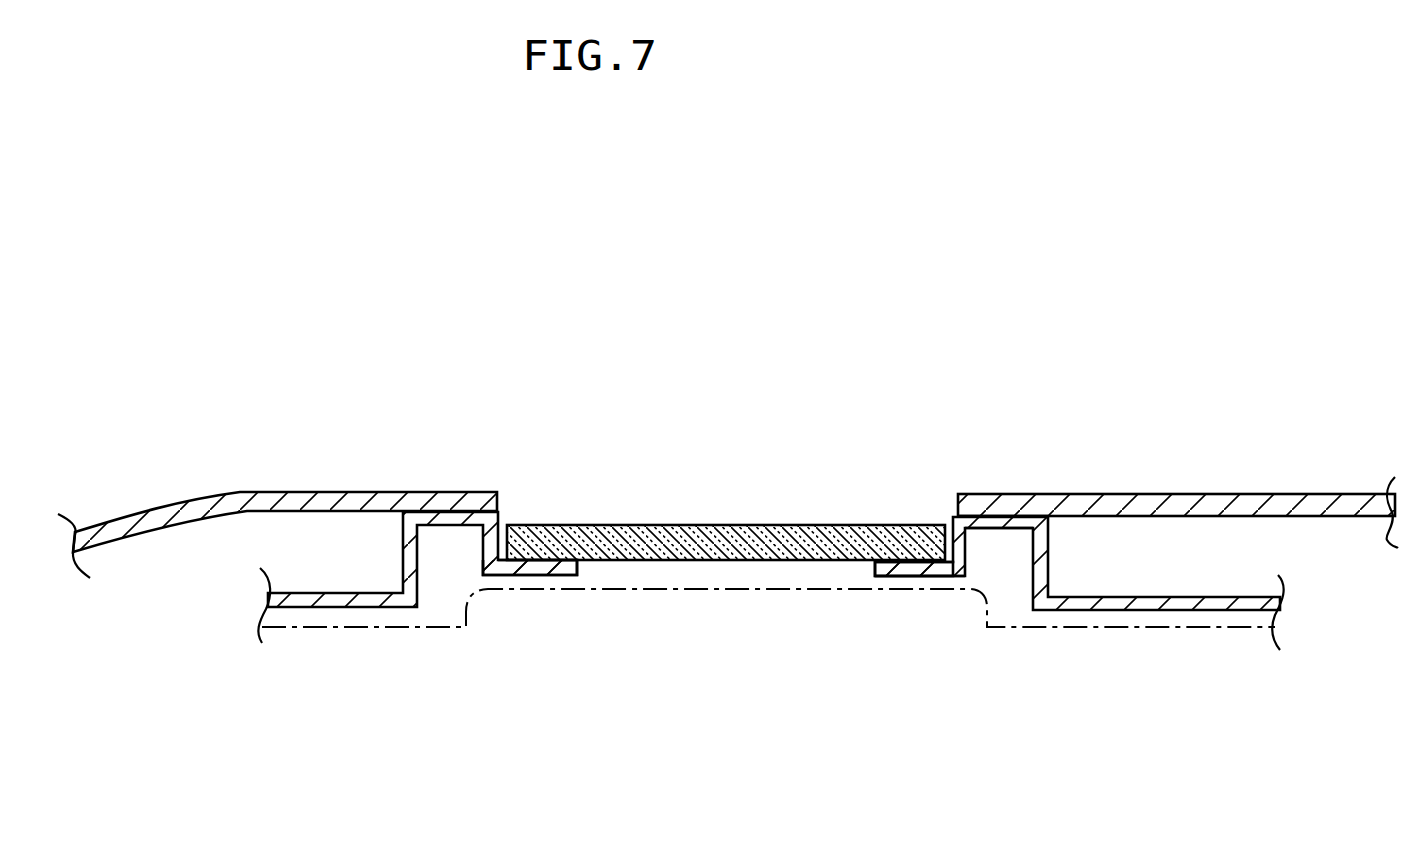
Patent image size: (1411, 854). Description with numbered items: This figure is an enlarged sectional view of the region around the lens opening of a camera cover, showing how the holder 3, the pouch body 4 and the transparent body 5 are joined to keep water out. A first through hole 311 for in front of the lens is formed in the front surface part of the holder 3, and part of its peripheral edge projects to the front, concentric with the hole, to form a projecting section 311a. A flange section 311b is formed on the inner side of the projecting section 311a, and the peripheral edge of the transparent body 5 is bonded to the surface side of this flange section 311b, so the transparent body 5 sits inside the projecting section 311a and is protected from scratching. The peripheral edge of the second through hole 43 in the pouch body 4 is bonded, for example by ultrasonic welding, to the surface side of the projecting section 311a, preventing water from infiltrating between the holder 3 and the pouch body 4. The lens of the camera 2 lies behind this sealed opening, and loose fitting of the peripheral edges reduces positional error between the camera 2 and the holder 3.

The camera 2 is at (983, 570).
The holder 3 is at (770, 586).
The pouch body 4 is at (1352, 443).
The transparent body 5 is at (667, 525).
The second through hole 43 is at (483, 491).
The first through hole 311 is at (873, 567).
The projecting section 311a is at (1005, 530).
The flange section 311b is at (917, 578).